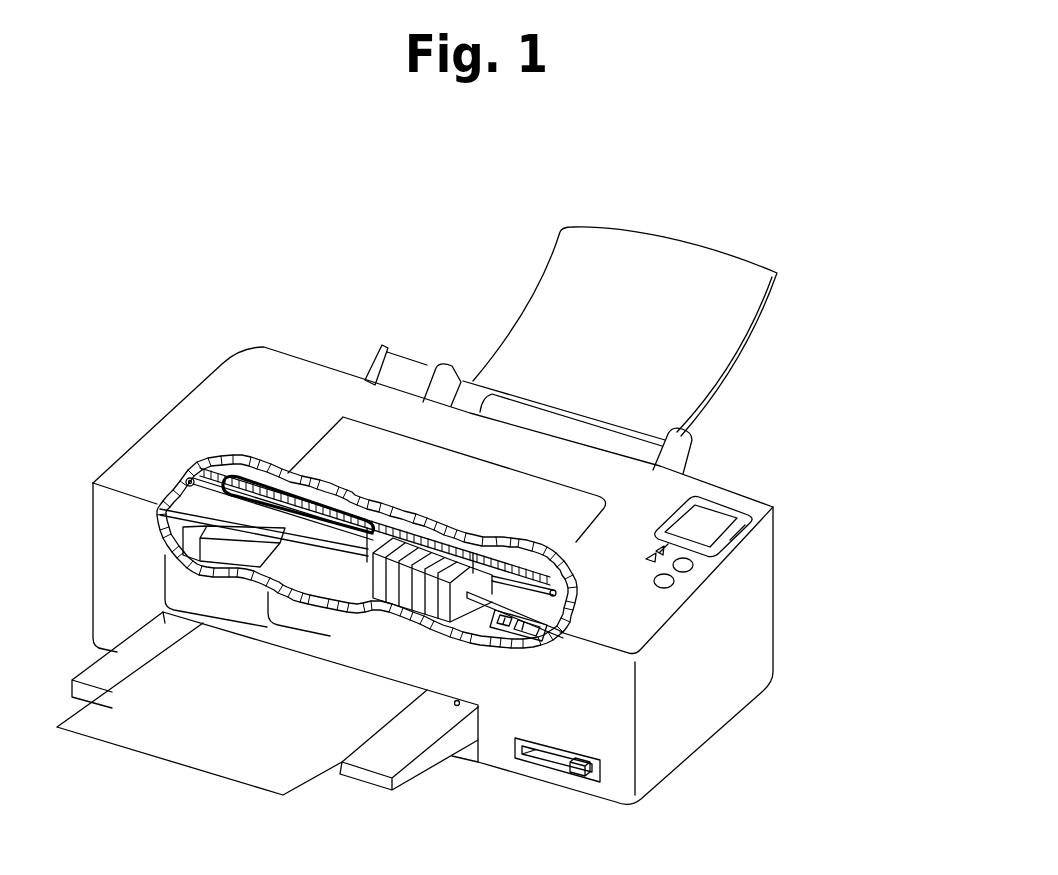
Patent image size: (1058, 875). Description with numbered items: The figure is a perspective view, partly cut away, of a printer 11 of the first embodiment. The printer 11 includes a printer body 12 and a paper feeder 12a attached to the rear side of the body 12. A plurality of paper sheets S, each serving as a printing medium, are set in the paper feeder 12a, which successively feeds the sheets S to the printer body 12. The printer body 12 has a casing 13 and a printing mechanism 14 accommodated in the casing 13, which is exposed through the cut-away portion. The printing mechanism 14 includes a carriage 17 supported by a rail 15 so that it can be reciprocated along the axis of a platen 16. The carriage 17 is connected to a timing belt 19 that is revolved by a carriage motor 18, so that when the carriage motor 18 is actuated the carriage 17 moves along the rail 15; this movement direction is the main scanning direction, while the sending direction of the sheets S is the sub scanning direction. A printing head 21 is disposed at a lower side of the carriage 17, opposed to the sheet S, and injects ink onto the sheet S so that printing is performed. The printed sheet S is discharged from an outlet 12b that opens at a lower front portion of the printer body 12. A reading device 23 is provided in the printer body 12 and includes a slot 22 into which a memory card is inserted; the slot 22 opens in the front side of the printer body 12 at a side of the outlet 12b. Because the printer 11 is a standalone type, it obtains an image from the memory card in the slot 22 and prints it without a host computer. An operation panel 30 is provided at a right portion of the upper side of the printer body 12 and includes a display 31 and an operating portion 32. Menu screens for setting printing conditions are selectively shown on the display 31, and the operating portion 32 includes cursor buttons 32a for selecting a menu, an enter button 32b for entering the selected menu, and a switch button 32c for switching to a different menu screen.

The printer 11 is at (820, 251).
The printer body 12 is at (199, 365).
The paper feeder 12a is at (371, 360).
The outlet 12b is at (457, 700).
The casing 13 is at (728, 500).
The printing mechanism 14 is at (304, 590).
The rail 15 is at (578, 604).
The platen 16 is at (225, 553).
The carriage 17 is at (470, 575).
The carriage motor 18 is at (555, 572).
The timing belt 19 is at (516, 562).
The printing head 21 is at (492, 604).
The slot 22 is at (568, 764).
The reading device 23 is at (561, 787).
The operation panel 30 is at (756, 508).
The display 31 is at (737, 536).
The operating portion 32 is at (855, 581).
The cursor buttons 32a is at (692, 565).
The enter button 32b is at (674, 583).
The switch button 32c is at (652, 562).
The paper sheet S is at (178, 757).